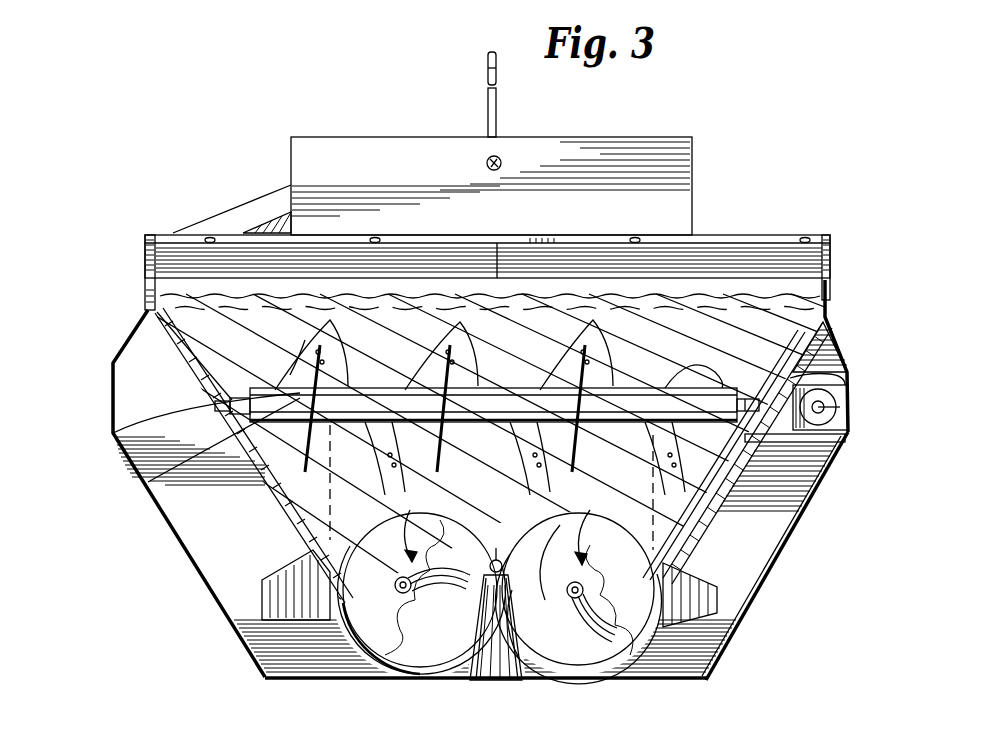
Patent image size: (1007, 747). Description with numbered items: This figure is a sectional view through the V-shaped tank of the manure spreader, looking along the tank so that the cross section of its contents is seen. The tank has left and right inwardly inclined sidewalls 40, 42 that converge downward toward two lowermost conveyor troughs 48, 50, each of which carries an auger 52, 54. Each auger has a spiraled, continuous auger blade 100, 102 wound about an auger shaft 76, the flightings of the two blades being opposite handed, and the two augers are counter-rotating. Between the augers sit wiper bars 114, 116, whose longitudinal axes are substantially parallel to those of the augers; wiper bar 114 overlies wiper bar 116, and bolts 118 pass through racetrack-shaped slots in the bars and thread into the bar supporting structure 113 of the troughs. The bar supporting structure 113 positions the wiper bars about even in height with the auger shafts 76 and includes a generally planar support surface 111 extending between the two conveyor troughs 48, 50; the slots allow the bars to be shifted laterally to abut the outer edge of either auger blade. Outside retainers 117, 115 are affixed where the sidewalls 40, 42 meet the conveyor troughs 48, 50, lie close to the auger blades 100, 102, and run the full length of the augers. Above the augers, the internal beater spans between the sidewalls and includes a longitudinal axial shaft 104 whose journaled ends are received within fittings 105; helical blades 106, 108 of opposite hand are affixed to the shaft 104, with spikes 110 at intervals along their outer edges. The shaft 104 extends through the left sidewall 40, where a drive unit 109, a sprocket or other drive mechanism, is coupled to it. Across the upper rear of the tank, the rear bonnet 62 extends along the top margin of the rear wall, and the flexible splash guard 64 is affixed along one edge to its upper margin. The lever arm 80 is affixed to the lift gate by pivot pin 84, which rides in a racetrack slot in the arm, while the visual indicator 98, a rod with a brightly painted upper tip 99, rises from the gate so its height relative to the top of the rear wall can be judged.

The left sidewall 40 is at (802, 482).
The right sidewall 42 is at (147, 478).
The conveyor trough 48 is at (612, 665).
The conveyor trough 50 is at (382, 655).
The auger 52 is at (722, 642).
The auger 54 is at (266, 678).
The rear bonnet 62 is at (148, 262).
The splash guard 64 is at (262, 248).
The auger shaft 76 is at (404, 594).
The lever arm 80 is at (232, 222).
The pivot pin 84 is at (500, 157).
The visual indicator 98 is at (488, 107).
The upper tip 99 is at (488, 54).
The auger blade 100 is at (640, 620).
The auger blade 102 is at (455, 600).
The axial shaft 104 is at (722, 388).
The fitting 105 is at (113, 436).
The helical blade 106 is at (700, 512).
The helical blade 108 is at (300, 372).
The drive unit 109 is at (848, 404).
The spike 110 is at (606, 372).
The support surface 111 is at (502, 612).
The bar supporting structure 113 is at (345, 652).
The wiper bar 114 is at (472, 600).
The outside retainer 115 is at (300, 522).
The wiper bar 116 is at (596, 625).
The outside retainer 117 is at (650, 545).
The bolt 118 is at (484, 600).